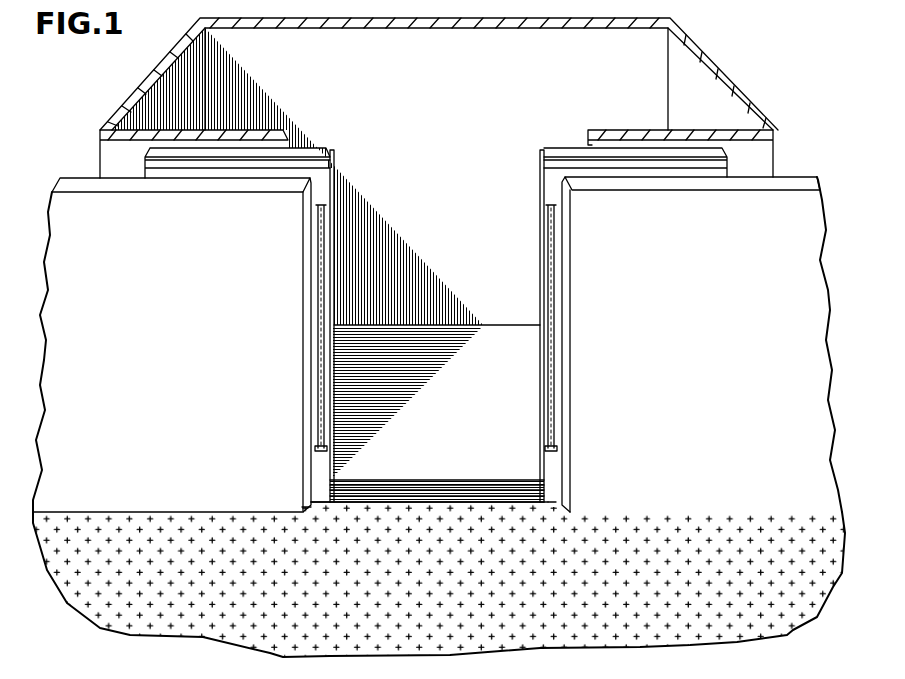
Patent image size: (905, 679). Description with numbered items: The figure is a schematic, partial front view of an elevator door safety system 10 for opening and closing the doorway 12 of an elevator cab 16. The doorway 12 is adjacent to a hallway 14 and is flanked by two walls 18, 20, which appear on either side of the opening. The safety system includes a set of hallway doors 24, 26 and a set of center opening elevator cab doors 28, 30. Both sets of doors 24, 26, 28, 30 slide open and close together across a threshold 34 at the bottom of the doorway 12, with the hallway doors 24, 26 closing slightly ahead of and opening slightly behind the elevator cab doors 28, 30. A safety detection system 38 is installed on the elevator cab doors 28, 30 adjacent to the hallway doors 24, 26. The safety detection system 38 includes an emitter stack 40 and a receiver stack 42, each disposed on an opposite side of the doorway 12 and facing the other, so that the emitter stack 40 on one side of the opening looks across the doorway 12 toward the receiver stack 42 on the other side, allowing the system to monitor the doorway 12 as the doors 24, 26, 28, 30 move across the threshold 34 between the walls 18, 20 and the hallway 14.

The door safety system 10 is at (580, 100).
The doorway 12 is at (307, 494).
The hallway 14 is at (633, 620).
The elevator cab 16 is at (445, 296).
The wall 18 is at (185, 356).
The wall 20 is at (695, 356).
The hallway door 24 is at (324, 186).
The hallway door 26 is at (548, 186).
The elevator cab door 28 is at (322, 148).
The elevator cab door 30 is at (554, 148).
The threshold 34 is at (455, 494).
The safety detection system 38 is at (436, 328).
The emitter stack 40 is at (322, 269).
The receiver stack 42 is at (548, 265).